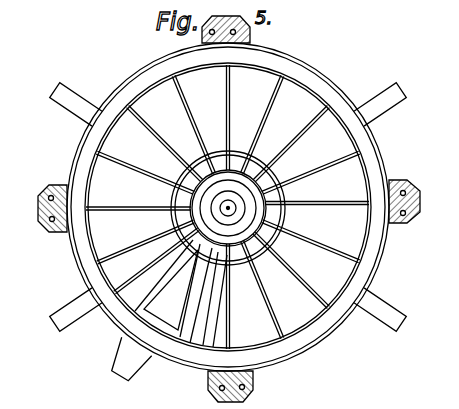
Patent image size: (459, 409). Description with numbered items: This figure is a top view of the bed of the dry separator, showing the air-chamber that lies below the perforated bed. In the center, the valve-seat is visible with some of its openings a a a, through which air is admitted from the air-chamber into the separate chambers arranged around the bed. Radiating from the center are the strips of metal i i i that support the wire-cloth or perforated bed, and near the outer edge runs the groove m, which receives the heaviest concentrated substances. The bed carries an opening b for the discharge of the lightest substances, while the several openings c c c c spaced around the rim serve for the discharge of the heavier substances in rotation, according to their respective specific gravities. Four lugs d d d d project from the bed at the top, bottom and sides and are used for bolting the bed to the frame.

The openings in the valve-seat a is at (320, 291).
The opening in the bed b is at (132, 358).
The openings for discharge of heavier substances c is at (228, 207).
The lugs d is at (136, 116).
The strips of metal i is at (208, 297).
The wedge plate l is at (167, 288).
The groove m is at (226, 207).